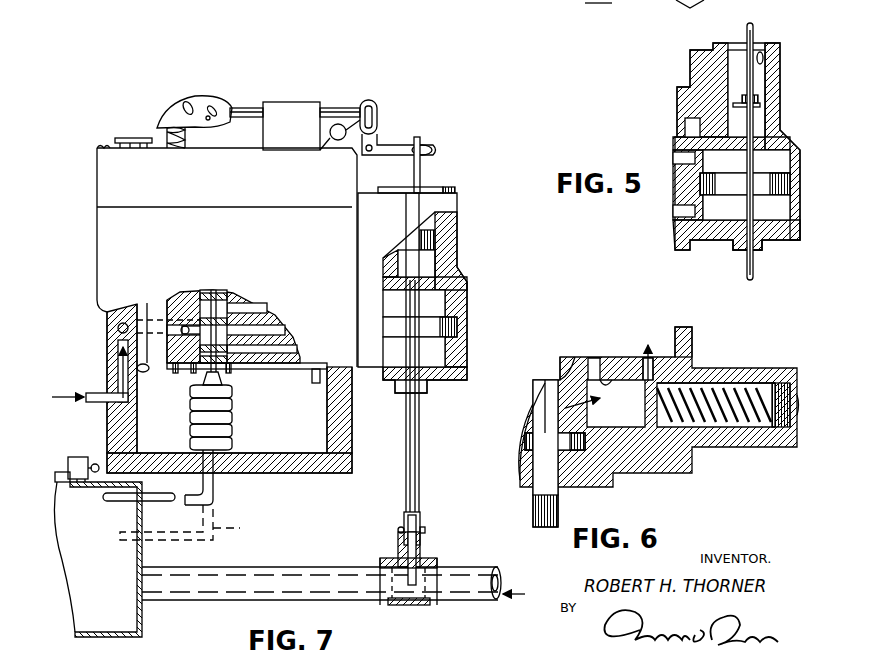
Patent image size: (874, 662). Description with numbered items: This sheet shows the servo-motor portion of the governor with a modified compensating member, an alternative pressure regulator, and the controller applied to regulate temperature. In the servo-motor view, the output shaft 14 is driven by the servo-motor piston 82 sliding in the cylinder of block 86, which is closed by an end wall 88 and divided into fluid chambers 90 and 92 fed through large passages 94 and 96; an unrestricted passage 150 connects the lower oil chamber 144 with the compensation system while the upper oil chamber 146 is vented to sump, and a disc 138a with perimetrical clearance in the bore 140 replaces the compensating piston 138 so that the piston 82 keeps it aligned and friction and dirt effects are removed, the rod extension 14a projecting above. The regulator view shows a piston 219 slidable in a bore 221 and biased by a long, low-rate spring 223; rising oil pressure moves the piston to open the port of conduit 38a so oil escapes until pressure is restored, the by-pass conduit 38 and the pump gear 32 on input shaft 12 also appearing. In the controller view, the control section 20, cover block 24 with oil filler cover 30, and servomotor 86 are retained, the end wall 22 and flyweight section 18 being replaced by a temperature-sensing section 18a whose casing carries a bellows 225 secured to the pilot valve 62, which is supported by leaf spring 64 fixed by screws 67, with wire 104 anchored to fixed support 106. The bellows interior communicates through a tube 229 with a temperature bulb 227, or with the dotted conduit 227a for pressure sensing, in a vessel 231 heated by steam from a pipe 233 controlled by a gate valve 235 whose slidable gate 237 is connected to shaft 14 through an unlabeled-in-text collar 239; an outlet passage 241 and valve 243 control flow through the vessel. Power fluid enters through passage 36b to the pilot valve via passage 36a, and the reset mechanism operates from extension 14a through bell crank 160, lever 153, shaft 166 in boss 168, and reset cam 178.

In FIG. 6, the input shaft 12 is at (545, 400).
In FIG. 7, the output shaft 14 is at (420, 440).
In FIG. 5, the output shaft 14 is at (745, 270).
In FIG. 7, the rod extension 14a is at (422, 165).
In FIG. 5, the rod extension 14a is at (754, 28).
In FIG. 6, the flyweight section 18 is at (692, 340).
In FIG. 7, the temperature-sensing section 18a is at (302, 473).
In FIG. 7, the control section 20 is at (213, 250).
In FIG. 5, the control section 20 is at (680, 90).
In FIG. 6, the end wall 22 is at (697, 473).
In FIG. 7, the cover block 24 is at (216, 191).
In FIG. 7, the oil filler cover 30 is at (128, 137).
In FIG. 6, the gear 32 is at (532, 442).
In FIG. 7, the conduit or passage 36a is at (200, 300).
In FIG. 7, the passage 36b is at (92, 394).
In FIG. 6, the by-pass conduit 38 is at (580, 400).
In FIG. 6, the conduit 38a is at (646, 357).
In FIG. 7, the pilot valve 62 is at (275, 331).
In FIG. 7, the leaf spring 64 is at (258, 375).
In FIG. 7, the screws 67 is at (316, 385).
In FIG. 7, the servo-motor piston 82 is at (462, 326).
In FIG. 5, the servo-motor piston 82 is at (778, 195).
In FIG. 7, the block 86 is at (460, 255).
In FIG. 5, the block 86 is at (800, 155).
In FIG. 7, the end wall 88 is at (437, 384).
In FIG. 5, the end wall 88 is at (775, 238).
In FIG. 7, the fluid chamber 90 is at (440, 352).
In FIG. 5, the fluid chamber 90 is at (732, 216).
In FIG. 7, the fluid chamber 92 is at (440, 306).
In FIG. 5, the fluid chamber 92 is at (732, 170).
In FIG. 7, the passage 94 is at (285, 349).
In FIG. 5, the passage 94 is at (672, 211).
In FIG. 7, the passage 96 is at (245, 309).
In FIG. 5, the passage 96 is at (672, 172).
In FIG. 7, the wire 104 is at (117, 329).
In FIG. 7, the fixed support 106 is at (160, 370).
In FIG. 7, the compensating piston 138 is at (410, 242).
In FIG. 5, the disc 138a is at (770, 106).
In FIG. 5, the bore 140 is at (765, 50).
In FIG. 7, the oil chamber 144 is at (440, 270).
In FIG. 5, the oil chamber 144 is at (762, 120).
In FIG. 5, the oil chamber 146 is at (760, 75).
In FIG. 5, the passage 150 is at (690, 130).
In FIG. 7, the lever 153 is at (340, 124).
In FIG. 7, the bell crank 160 is at (395, 148).
In FIG. 7, the shaft 166 is at (240, 106).
In FIG. 7, the boss 168 is at (282, 113).
In FIG. 7, the reset cam 178 is at (168, 108).
In FIG. 6, the piston 219 is at (705, 375).
In FIG. 6, the bore 221 is at (580, 380).
In FIG. 6, the spring 223 is at (738, 440).
In FIG. 7, the bellows 225 is at (235, 430).
In FIG. 7, the temperature bulb 227 is at (115, 500).
In FIG. 7, the conduit 227a is at (200, 522).
In FIG. 7, the tube 229 is at (215, 480).
In FIG. 7, the vessel 231 is at (142, 615).
In FIG. 7, the pipe 233 is at (282, 567).
In FIG. 7, the gate valve 235 is at (432, 565).
In FIG. 7, the slidable gate 237 is at (398, 570).
In FIG. 7, the collar 239 is at (425, 495).
In FIG. 7, the outlet passage 241 is at (58, 478).
In FIG. 7, the valve 243 is at (82, 462).